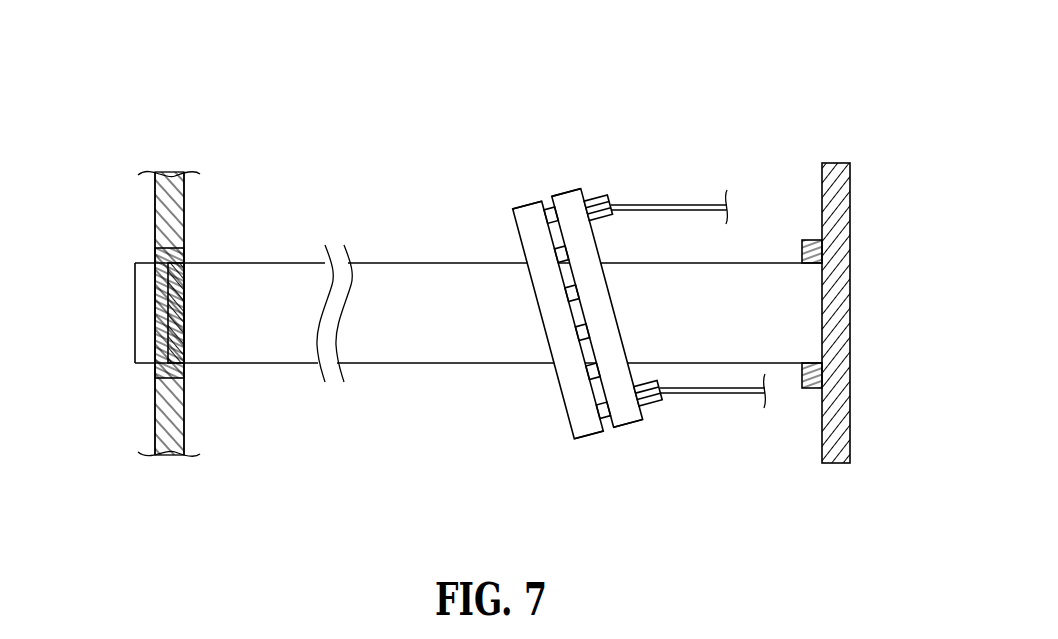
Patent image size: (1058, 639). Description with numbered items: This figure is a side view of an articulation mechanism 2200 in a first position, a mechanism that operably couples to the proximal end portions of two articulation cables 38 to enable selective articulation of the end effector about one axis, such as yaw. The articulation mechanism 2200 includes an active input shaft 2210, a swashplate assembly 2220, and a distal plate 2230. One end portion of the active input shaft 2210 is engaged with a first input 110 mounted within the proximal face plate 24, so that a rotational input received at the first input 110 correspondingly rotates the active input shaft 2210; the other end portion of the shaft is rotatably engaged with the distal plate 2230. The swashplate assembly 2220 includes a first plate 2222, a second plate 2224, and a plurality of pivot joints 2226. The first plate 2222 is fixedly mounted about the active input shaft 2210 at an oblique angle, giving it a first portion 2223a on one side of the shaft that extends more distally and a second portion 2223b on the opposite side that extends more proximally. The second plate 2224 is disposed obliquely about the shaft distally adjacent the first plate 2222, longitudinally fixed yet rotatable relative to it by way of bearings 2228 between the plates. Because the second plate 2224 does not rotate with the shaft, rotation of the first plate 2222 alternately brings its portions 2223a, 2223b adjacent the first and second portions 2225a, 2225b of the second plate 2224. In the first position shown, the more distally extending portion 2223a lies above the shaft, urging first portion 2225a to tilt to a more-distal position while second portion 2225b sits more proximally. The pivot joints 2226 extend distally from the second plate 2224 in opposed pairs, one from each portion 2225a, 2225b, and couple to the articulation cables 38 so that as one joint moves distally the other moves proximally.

The articulation mechanism 2200 is at (184, 90).
The proximal face plate 24 is at (155, 410).
The first input 110 is at (135, 305).
The active input shaft 2210 is at (273, 342).
The distal plate 2230 is at (850, 310).
The swashplate assembly 2220 is at (593, 321).
The first plate 2222 is at (506, 320).
The first portion of first plate 2223a is at (527, 200).
The second portion of first plate 2223b is at (590, 438).
The second plate 2224 is at (636, 314).
The first portion of second plate 2225a is at (563, 190).
The second portion of second plate 2225b is at (630, 427).
The pivot joints 2226 is at (600, 197).
The bearings 2228 is at (553, 255).
The articulation cables 38 is at (698, 200).